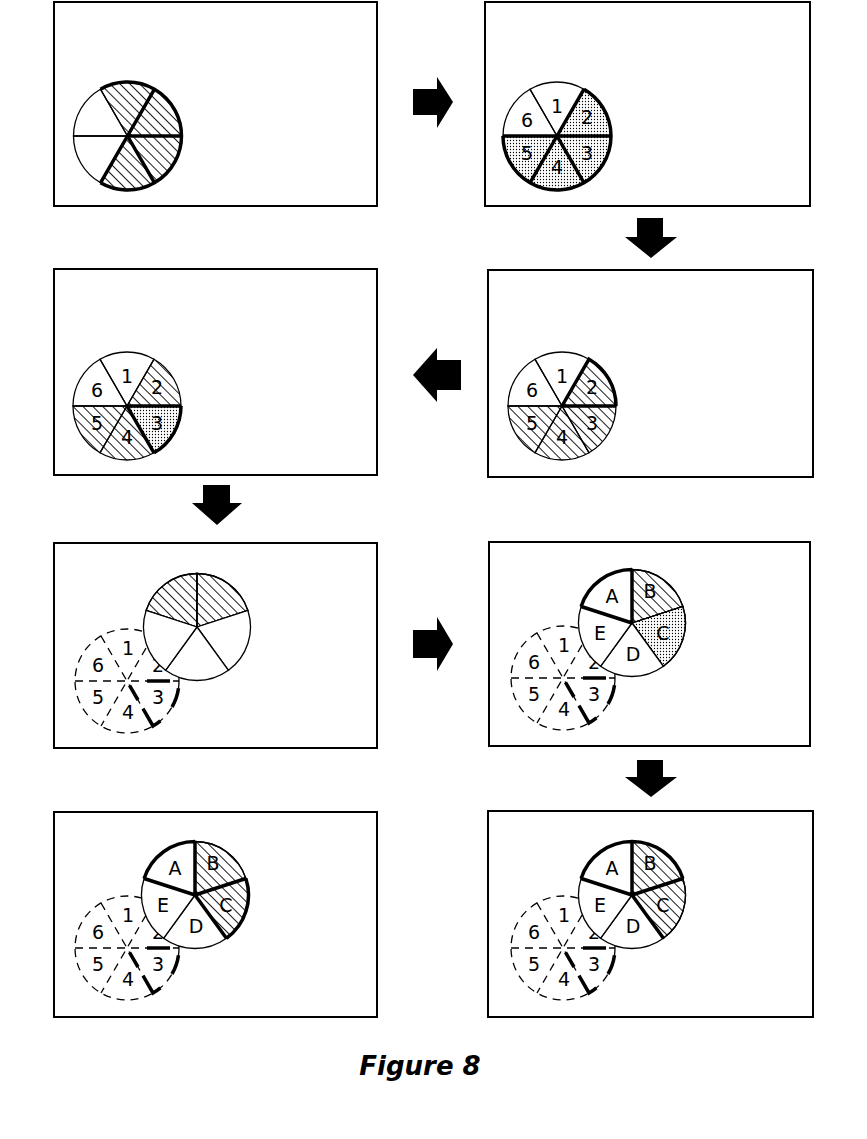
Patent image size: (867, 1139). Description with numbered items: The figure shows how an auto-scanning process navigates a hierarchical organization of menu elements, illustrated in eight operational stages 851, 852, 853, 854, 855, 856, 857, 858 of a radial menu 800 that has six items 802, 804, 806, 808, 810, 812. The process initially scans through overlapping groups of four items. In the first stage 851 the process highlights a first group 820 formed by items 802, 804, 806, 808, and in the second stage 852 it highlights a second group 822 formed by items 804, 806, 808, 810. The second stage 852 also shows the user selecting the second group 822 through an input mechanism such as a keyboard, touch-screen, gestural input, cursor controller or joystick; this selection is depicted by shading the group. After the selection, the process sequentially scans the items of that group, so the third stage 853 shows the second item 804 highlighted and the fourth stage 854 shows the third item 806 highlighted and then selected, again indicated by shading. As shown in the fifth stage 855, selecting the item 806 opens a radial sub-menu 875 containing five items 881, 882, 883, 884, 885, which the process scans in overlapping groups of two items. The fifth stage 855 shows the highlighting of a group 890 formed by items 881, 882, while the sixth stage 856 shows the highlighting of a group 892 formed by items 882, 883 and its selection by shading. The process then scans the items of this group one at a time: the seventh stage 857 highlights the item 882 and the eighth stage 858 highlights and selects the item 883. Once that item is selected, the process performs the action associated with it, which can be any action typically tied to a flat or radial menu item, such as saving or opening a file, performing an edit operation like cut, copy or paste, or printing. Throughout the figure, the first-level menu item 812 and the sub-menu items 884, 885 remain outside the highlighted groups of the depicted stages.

The radial menu 800 is at (131, 132).
The item 802 is at (124, 94).
The second item 804 is at (159, 102).
The third item 806 is at (165, 164).
The item 808 is at (128, 186).
The item 810 is at (90, 166).
The item 812 is at (91, 106).
The first group 820 is at (169, 117).
The second group 822 is at (610, 135).
The first stage 851 is at (215, 104).
The second stage 852 is at (647, 104).
The third stage 853 is at (650, 373).
The fourth stage 854 is at (215, 372).
The fifth stage 855 is at (215, 645).
The sixth stage 856 is at (649, 644).
The seventh stage 857 is at (650, 914).
The eighth stage 858 is at (215, 914).
The radial sub-menu 875 is at (191, 631).
The item 881 is at (158, 592).
The item 882 is at (226, 590).
The item 883 is at (236, 644).
The item 884 is at (197, 673).
The item 885 is at (137, 630).
The group 890 is at (207, 585).
The group 892 is at (672, 617).